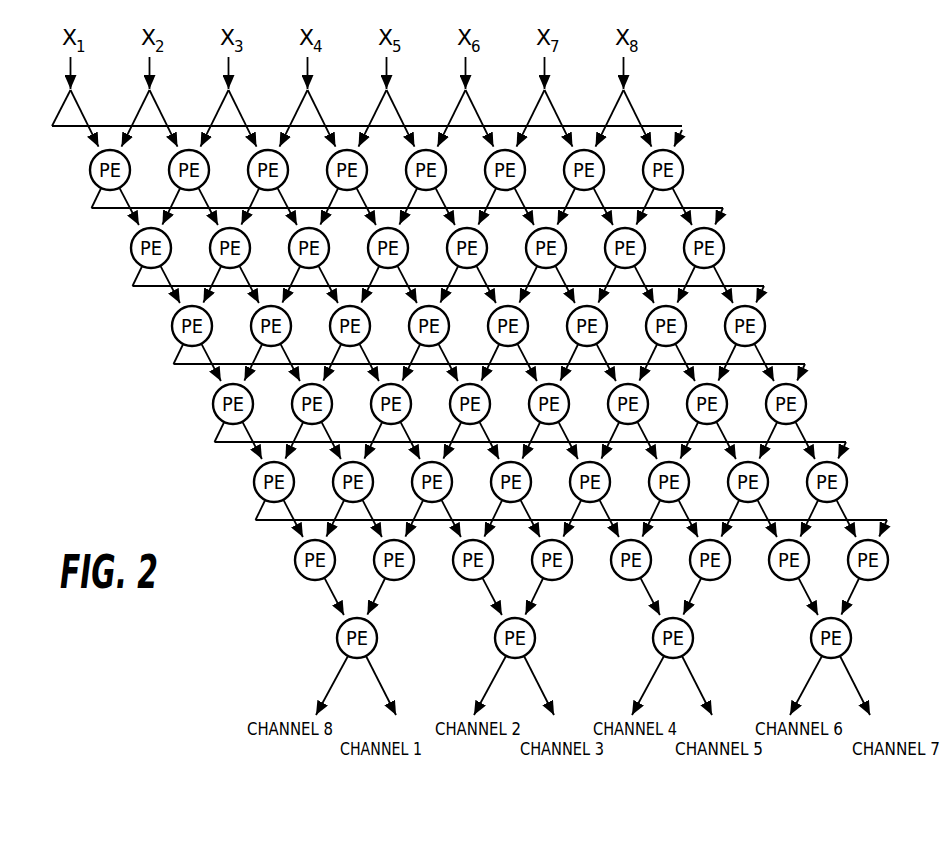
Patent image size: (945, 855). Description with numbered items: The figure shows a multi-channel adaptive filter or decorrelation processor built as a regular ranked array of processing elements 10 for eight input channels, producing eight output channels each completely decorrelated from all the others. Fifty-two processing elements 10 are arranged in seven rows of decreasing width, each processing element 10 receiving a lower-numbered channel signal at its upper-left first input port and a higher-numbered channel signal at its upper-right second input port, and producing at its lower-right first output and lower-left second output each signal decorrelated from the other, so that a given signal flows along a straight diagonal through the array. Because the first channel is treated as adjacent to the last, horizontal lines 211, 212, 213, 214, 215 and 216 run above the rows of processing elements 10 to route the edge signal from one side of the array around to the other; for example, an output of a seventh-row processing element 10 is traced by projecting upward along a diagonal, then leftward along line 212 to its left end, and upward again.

The processing element 10 is at (464, 424).
The line 211 is at (660, 124).
The line 212 is at (693, 207).
The line 213 is at (742, 285).
The line 214 is at (776, 363).
The line 215 is at (826, 441).
The line 216 is at (866, 519).